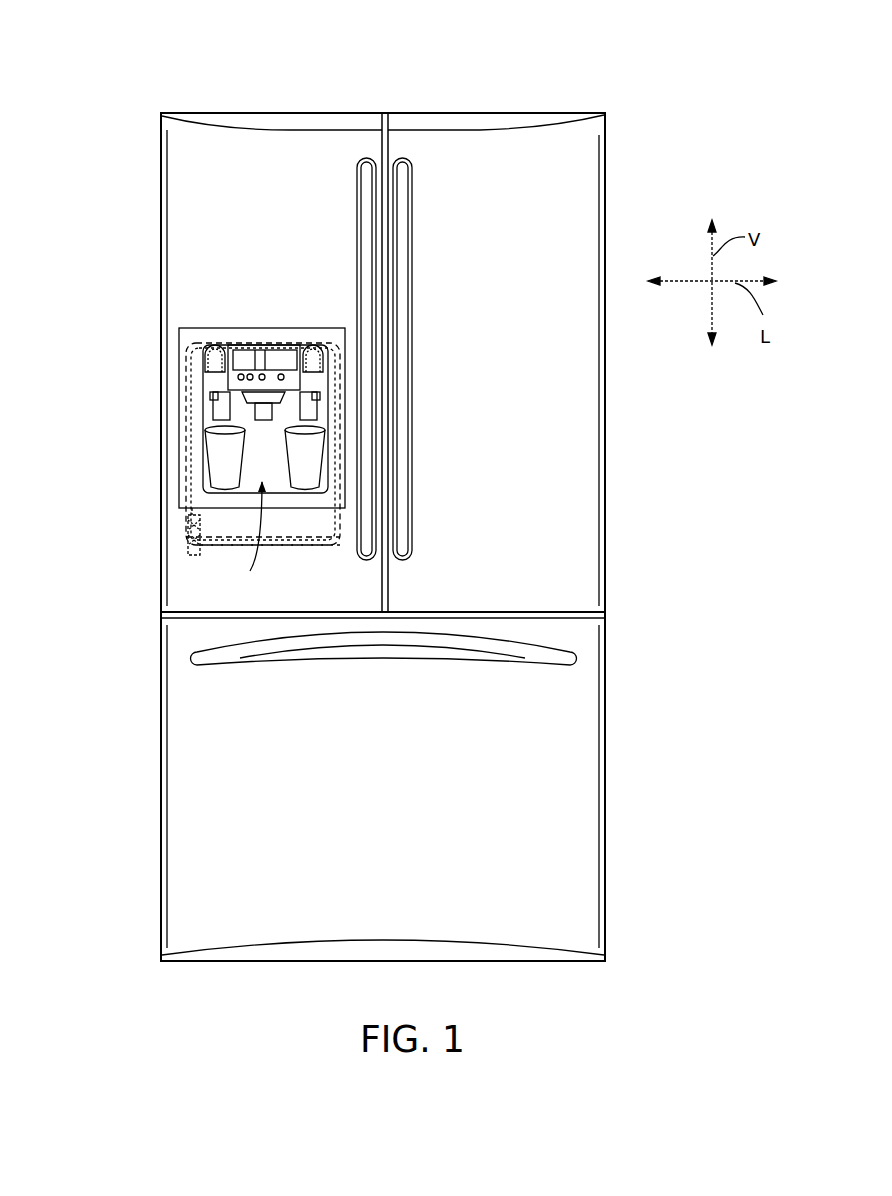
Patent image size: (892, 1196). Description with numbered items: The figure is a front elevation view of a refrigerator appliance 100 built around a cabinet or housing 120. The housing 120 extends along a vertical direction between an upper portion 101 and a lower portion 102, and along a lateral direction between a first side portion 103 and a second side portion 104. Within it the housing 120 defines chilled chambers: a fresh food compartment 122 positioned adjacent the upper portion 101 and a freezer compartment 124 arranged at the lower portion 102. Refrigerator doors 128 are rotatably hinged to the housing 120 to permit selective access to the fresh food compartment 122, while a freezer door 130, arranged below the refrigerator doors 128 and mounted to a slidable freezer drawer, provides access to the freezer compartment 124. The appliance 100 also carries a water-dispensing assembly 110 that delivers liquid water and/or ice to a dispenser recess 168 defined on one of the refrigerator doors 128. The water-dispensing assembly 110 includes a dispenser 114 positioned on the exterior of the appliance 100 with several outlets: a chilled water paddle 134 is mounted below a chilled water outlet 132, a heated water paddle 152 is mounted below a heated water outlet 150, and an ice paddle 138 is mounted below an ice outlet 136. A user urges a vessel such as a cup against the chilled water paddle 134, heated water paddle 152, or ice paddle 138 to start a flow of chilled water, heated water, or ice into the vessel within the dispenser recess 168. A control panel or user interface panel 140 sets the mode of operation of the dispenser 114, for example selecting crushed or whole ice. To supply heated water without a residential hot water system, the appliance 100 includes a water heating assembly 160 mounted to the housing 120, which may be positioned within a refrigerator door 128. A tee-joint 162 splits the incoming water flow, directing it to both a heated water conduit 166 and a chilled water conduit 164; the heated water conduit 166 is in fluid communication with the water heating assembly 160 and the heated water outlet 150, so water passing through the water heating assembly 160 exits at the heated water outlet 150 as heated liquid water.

The refrigerator appliance 100 is at (128, 73).
The upper portion 101 is at (620, 111).
The lower portion 102 is at (621, 950).
The first side portion 103 is at (164, 104).
The second side portion 104 is at (601, 104).
The water-dispensing assembly 110 is at (196, 316).
The dispenser 114 is at (215, 328).
The housing 120 is at (605, 825).
The fresh food compartment 122 is at (558, 465).
The freezer compartment 124 is at (560, 757).
The refrigerator doors 128 is at (200, 218).
The freezer door 130 is at (200, 825).
The chilled water outlet 132 is at (322, 394).
The chilled water paddle 134 is at (318, 413).
The ice outlet 136 is at (300, 422).
The ice paddle 138 is at (280, 400).
The user interface panel 140 is at (270, 338).
The heated water outlet 150 is at (212, 397).
The heated water paddle 152 is at (215, 413).
The water heating assembly 160 is at (176, 435).
The tee-joint 162 is at (185, 540).
The chilled water conduit 164 is at (265, 550).
The heated water conduit 166 is at (194, 515).
The dispenser recess 168 is at (233, 536).